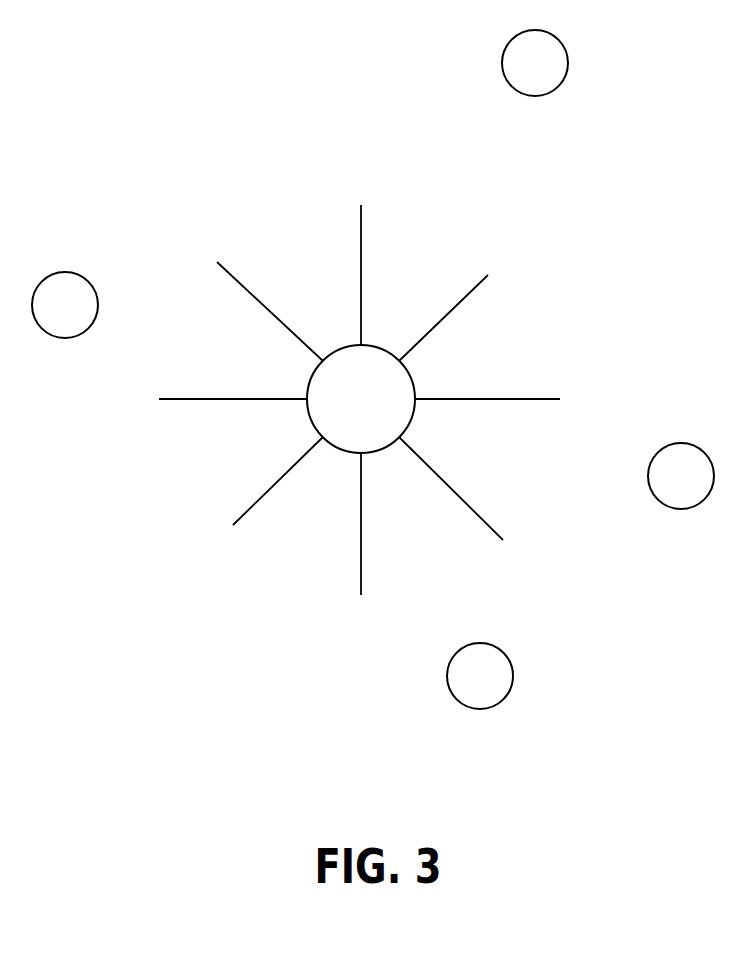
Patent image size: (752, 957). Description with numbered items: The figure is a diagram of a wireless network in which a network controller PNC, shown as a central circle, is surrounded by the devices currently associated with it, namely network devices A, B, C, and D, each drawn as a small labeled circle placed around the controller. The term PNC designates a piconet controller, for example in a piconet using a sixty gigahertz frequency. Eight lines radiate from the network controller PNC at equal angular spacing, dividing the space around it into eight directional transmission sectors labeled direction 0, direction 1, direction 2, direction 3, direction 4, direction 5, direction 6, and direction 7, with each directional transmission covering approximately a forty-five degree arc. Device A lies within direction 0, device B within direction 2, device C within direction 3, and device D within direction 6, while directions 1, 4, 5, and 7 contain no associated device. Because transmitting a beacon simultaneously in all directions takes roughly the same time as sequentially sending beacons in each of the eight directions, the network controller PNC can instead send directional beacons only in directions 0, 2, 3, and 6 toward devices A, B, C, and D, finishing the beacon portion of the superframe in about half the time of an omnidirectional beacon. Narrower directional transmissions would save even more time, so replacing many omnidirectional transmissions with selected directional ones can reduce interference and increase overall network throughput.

The network controller PNC is at (361, 399).
The direction 0 is at (442, 318).
The direction 1 is at (487, 373).
The direction 2 is at (451, 480).
The direction 3 is at (384, 524).
The direction 4 is at (282, 481).
The direction 5 is at (233, 425).
The direction 6 is at (270, 320).
The direction 7 is at (338, 275).
The network device A is at (535, 63).
The network device B is at (681, 476).
The network device C is at (480, 676).
The network device D is at (65, 305).